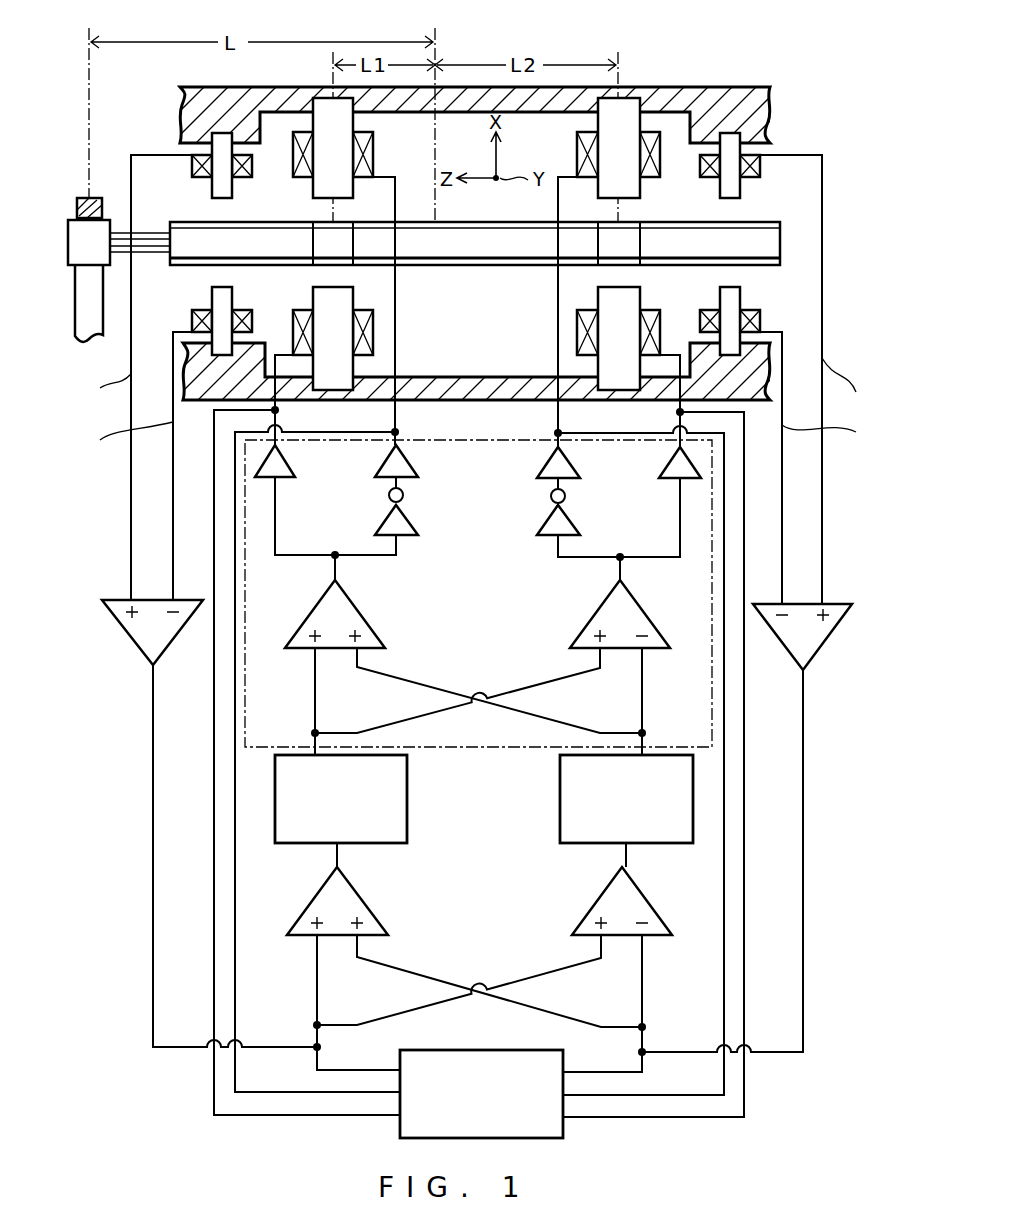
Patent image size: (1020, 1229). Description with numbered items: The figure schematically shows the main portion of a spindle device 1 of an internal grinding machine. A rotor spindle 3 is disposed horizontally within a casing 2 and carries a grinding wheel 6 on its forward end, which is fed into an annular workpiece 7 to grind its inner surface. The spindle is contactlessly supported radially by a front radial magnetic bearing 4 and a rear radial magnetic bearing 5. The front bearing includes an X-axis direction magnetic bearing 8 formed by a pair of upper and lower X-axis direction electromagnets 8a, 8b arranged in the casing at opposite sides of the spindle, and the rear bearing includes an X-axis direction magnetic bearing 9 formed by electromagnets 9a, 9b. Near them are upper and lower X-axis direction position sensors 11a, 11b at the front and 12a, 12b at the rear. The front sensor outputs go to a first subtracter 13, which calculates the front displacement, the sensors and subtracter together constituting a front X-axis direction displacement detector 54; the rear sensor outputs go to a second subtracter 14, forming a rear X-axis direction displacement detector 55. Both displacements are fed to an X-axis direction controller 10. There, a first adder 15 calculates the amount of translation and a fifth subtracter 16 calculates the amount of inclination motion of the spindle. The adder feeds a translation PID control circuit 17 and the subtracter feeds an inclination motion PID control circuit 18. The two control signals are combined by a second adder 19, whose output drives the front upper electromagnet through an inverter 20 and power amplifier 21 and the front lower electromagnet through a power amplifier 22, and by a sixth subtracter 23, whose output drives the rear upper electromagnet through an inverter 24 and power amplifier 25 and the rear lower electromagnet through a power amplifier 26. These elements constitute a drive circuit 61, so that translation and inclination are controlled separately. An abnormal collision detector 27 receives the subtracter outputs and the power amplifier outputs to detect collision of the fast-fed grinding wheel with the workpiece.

The spindle device 1 is at (465, 216).
The casing 2 is at (701, 87).
The rotor spindle 3 is at (476, 267).
The front radial magnetic bearing 4 is at (332, 223).
The rear radial magnetic bearing 5 is at (618, 211).
The grinding wheel 6 is at (68, 262).
The workpiece 7 is at (80, 201).
The front X-axis direction magnetic bearing 8 is at (351, 244).
The front upper X-axis direction electromagnet 8a is at (316, 188).
The front lower X-axis direction electromagnet 8b is at (316, 296).
The rear X-axis direction magnetic bearing 9 is at (618, 244).
The rear upper X-axis direction electromagnet 9a is at (640, 190).
The rear lower X-axis direction electromagnet 9b is at (640, 296).
The X-axis direction controller 10 is at (478, 654).
The front upper X-axis direction position sensor 11a is at (214, 190).
The front lower X-axis direction position sensor 11b is at (214, 294).
The rear upper X-axis direction position sensor 12a is at (741, 190).
The rear lower X-axis direction position sensor 12b is at (741, 295).
The first subtracter 13 is at (135, 647).
The second subtracter 14 is at (824, 648).
The first adder 15 is at (362, 903).
The fifth subtracter 16 is at (648, 903).
The translation PID control circuit 17 is at (408, 801).
The inclination motion PID control circuit 18 is at (559, 800).
The second adder 19 is at (362, 615).
The inverter 20 is at (410, 518).
The power amplifier 21 is at (410, 458).
The power amplifier 22 is at (288, 458).
The sixth subtracter 23 is at (648, 615).
The inverter 24 is at (546, 518).
The power amplifier 25 is at (546, 460).
The power amplifier 26 is at (668, 460).
The abnormal collision detector 27 is at (442, 1050).
The front X-axis direction displacement detector 54 is at (117, 628).
The rear X-axis direction displacement detector 55 is at (838, 634).
The drive circuit 61 is at (520, 597).